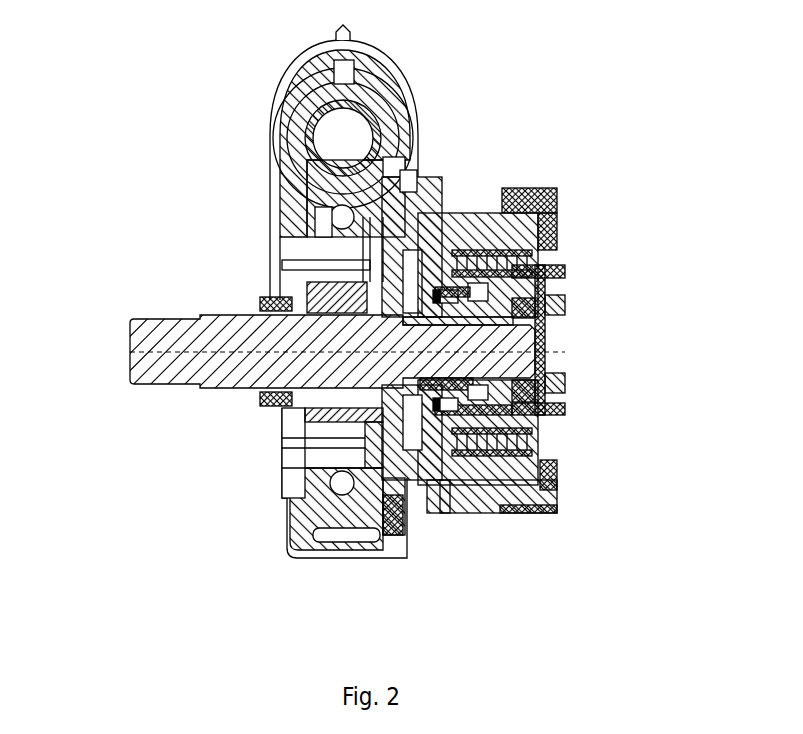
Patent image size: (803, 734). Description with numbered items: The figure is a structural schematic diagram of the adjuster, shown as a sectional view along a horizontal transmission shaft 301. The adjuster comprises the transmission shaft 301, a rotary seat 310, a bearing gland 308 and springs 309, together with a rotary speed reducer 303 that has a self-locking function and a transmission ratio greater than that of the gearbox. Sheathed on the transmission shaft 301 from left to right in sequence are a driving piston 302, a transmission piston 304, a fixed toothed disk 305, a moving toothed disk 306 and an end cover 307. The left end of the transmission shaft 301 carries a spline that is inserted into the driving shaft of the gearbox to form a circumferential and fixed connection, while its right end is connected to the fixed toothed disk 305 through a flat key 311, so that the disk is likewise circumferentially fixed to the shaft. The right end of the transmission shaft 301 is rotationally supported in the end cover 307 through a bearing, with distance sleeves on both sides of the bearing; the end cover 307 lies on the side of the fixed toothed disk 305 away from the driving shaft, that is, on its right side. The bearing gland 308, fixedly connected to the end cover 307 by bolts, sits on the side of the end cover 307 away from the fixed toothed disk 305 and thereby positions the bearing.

The transmission shaft 301 is at (173, 320).
The driving piston 302 is at (262, 300).
The rotary speed reducer 303 is at (268, 132).
The transmission piston 304 is at (392, 240).
The fixed toothed disk 305 is at (420, 270).
The moving toothed disk 306 is at (485, 238).
The end cover 307 is at (558, 215).
The bearing gland 308 is at (552, 360).
The spring 309 is at (540, 453).
The rotary seat 310 is at (493, 480).
The flat key 311 is at (418, 372).